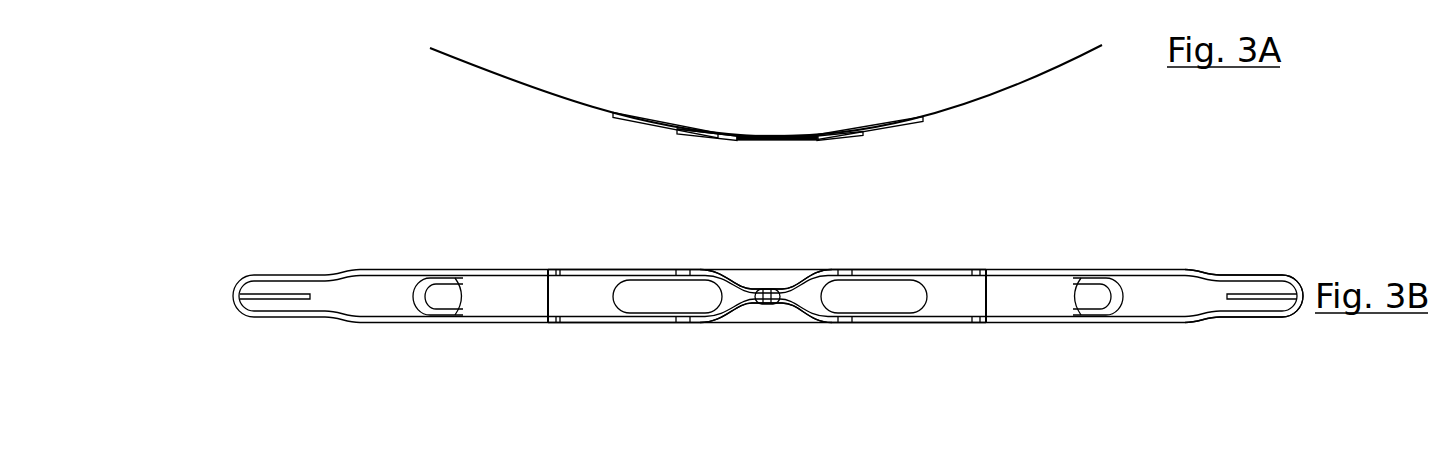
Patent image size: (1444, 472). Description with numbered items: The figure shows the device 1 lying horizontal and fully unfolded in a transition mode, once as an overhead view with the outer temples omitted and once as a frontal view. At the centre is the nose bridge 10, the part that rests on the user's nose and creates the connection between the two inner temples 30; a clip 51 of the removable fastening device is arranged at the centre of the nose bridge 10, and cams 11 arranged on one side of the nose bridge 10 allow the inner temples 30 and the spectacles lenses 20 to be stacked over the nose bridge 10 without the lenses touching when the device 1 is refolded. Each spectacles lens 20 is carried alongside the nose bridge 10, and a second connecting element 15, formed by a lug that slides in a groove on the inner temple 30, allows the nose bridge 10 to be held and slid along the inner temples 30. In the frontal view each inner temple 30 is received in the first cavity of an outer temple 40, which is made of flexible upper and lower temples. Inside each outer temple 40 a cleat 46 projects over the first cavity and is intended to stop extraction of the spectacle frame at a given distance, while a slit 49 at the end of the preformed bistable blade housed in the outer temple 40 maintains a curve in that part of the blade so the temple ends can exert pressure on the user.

In FIG. 3B, the device 1 is at (214, 234).
In FIG. 3A, the nose bridge 10 is at (777, 134).
In FIG. 3B, the nose bridge 10 is at (741, 322).
In FIG. 3A, the cam 11 is at (703, 137).
In FIG. 3B, the second connecting element 15 is at (870, 261).
In FIG. 3A, the spectacles lens 20 is at (882, 121).
In FIG. 3B, the spectacles lens 20 is at (883, 320).
In FIG. 3A, the inner temple 30 is at (1015, 86).
In FIG. 3B, the inner temple 30 is at (928, 322).
In FIG. 3B, the outer temple 40 is at (1165, 347).
In FIG. 3B, the cleat 46 is at (1114, 303).
In FIG. 3B, the slit 49 is at (1255, 297).
In FIG. 3B, the clip 51 is at (771, 322).